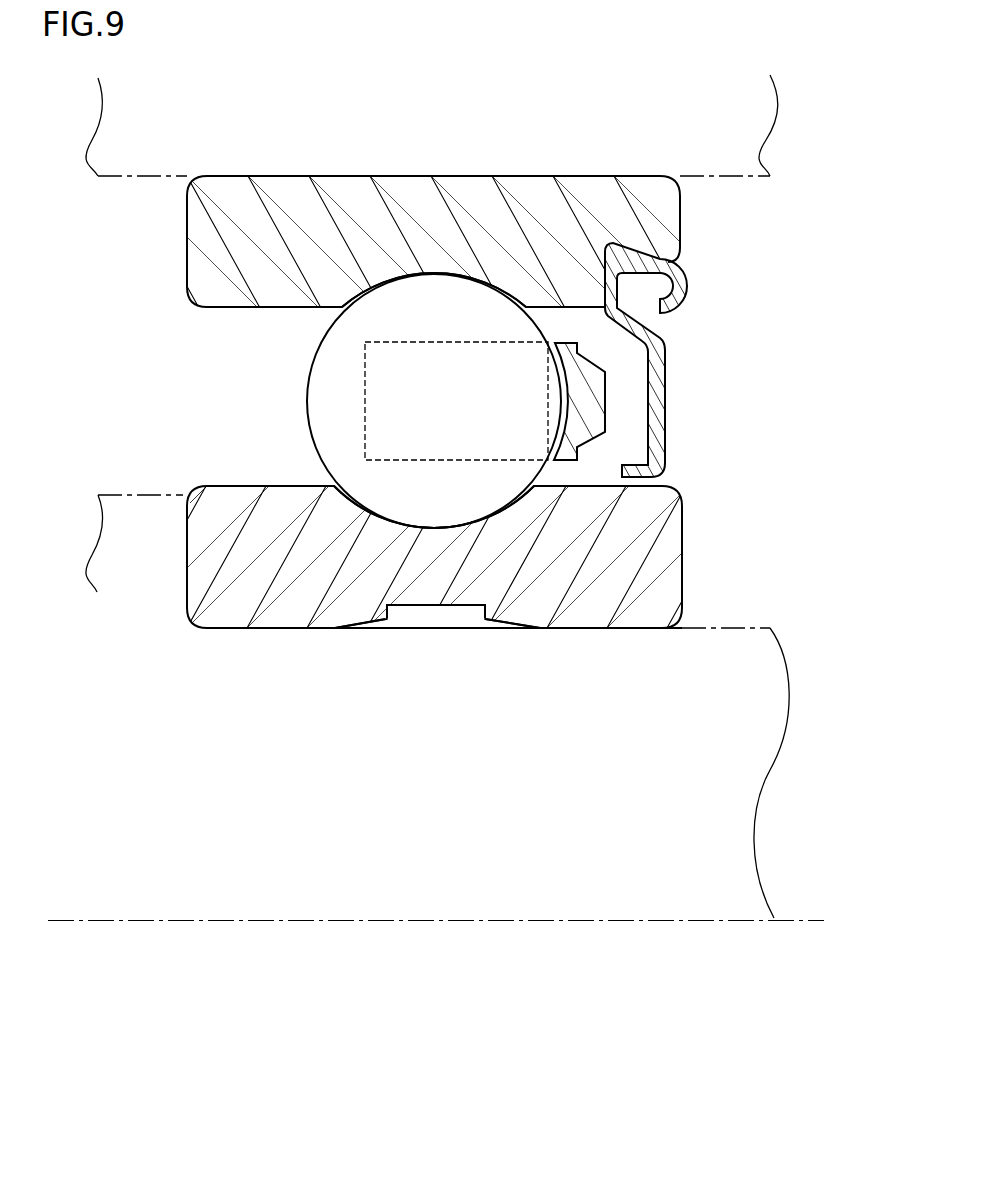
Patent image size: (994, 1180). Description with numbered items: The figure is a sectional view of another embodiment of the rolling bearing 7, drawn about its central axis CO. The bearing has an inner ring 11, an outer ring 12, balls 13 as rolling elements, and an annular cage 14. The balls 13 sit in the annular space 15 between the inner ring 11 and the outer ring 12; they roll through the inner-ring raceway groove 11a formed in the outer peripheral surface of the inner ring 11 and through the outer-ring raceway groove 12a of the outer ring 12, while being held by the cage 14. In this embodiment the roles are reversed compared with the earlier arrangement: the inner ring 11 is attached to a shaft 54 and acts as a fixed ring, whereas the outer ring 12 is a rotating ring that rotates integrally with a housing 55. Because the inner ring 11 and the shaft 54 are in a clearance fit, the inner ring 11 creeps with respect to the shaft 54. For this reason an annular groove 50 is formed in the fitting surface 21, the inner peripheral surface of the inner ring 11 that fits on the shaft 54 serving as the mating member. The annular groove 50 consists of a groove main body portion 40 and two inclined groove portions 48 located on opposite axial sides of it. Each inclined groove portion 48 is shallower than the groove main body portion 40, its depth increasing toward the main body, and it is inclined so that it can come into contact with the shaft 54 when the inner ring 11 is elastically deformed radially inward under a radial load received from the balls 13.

The rolling bearing 7 is at (553, 176).
The inner ring 11 is at (658, 527).
The inner-ring raceway groove 11a is at (471, 525).
The outer ring 12 is at (662, 222).
The outer-ring raceway groove 12a is at (401, 277).
The ball 13 is at (470, 306).
The cage 14 is at (605, 380).
The annular space 15 is at (207, 411).
The fitting surface 21 is at (585, 630).
The groove main body portion 40 is at (441, 607).
The inclined groove portion 48 is at (368, 625).
The annular groove 50 is at (408, 617).
The shaft 54 is at (752, 628).
The housing 55 is at (120, 177).
The central axis CO is at (617, 922).